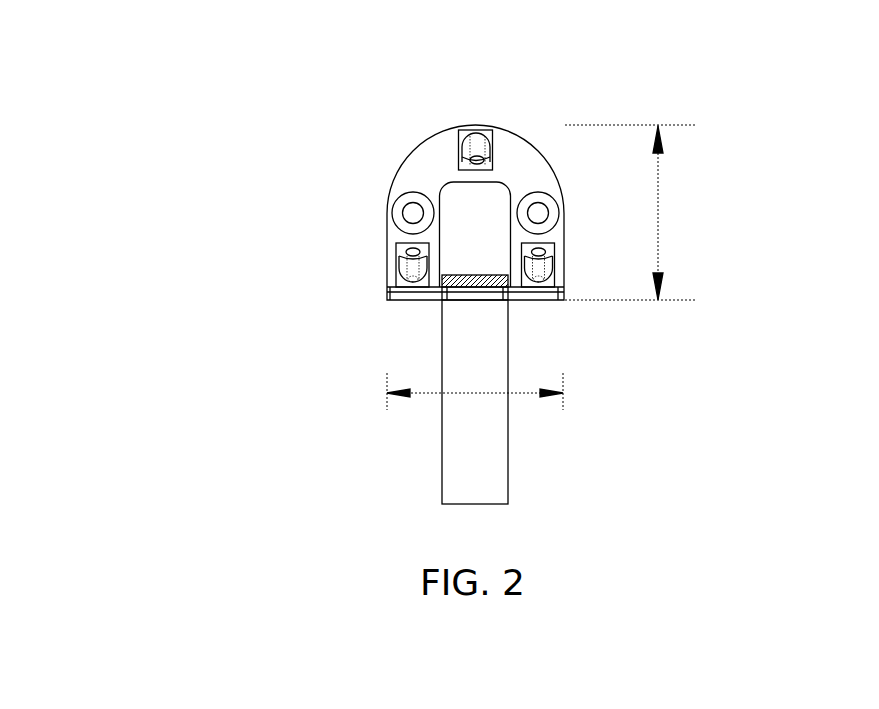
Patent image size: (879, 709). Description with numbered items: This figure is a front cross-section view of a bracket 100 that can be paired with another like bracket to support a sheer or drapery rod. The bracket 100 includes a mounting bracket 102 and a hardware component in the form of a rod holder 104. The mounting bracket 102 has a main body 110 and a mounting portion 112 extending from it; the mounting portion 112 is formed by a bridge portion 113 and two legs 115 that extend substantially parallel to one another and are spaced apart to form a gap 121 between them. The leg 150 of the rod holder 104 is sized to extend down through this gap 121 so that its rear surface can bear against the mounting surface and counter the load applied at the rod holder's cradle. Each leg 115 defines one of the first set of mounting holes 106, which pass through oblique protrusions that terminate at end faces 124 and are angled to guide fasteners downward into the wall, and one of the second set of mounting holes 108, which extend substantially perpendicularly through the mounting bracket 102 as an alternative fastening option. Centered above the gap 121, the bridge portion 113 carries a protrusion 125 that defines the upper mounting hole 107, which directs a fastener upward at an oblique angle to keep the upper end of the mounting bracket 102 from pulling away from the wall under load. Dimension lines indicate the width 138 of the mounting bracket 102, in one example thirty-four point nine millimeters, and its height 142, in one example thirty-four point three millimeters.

The bracket 100 is at (192, 180).
The mounting bracket 102 is at (552, 182).
The rod holder 104 is at (508, 362).
The first set of mounting holes 106 is at (405, 258).
The upper mounting hole 107 is at (493, 165).
The second set of mounting holes 108 is at (400, 216).
The main body 110 is at (558, 300).
The mounting portion 112 is at (562, 162).
The bridge portion 113 is at (424, 160).
The legs 115 is at (394, 237).
The gap 121 is at (458, 232).
The end faces 124 is at (408, 251).
The protrusion 125 is at (483, 128).
The width 138 is at (420, 393).
The height 142 is at (658, 181).
The leg 150 is at (508, 460).